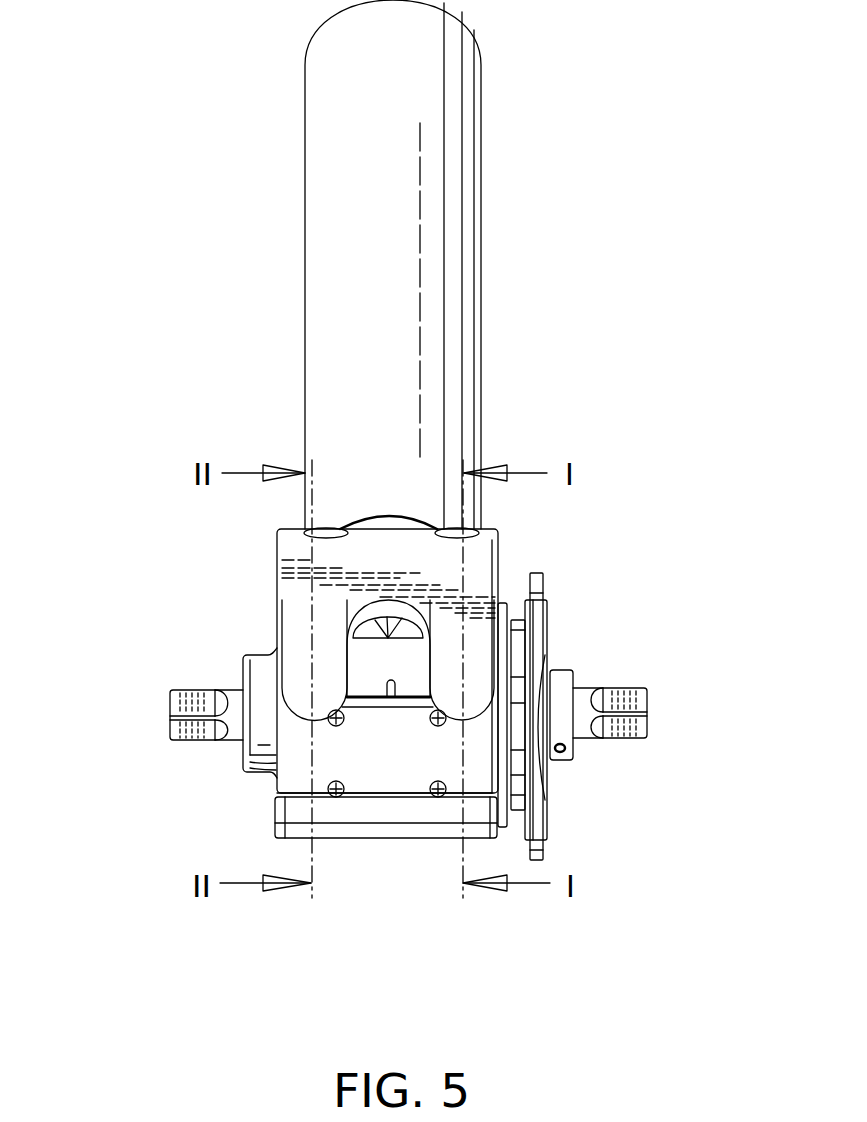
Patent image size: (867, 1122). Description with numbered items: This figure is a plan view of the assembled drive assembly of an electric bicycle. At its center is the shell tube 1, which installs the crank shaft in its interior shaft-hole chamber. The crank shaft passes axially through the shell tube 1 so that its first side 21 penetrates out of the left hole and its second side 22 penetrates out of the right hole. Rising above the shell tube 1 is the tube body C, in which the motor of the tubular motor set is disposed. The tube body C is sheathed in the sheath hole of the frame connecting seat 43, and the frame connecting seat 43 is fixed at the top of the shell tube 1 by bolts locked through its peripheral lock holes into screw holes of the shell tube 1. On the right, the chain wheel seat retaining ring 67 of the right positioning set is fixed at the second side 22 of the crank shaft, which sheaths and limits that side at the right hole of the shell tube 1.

The tube body C is at (305, 168).
The frame connecting seat 43 is at (280, 579).
The shell tube 1 is at (297, 763).
The first side of the crank shaft 21 is at (180, 743).
The second side of the crank shaft 22 is at (632, 740).
The chain wheel seat retaining ring 67 is at (560, 677).